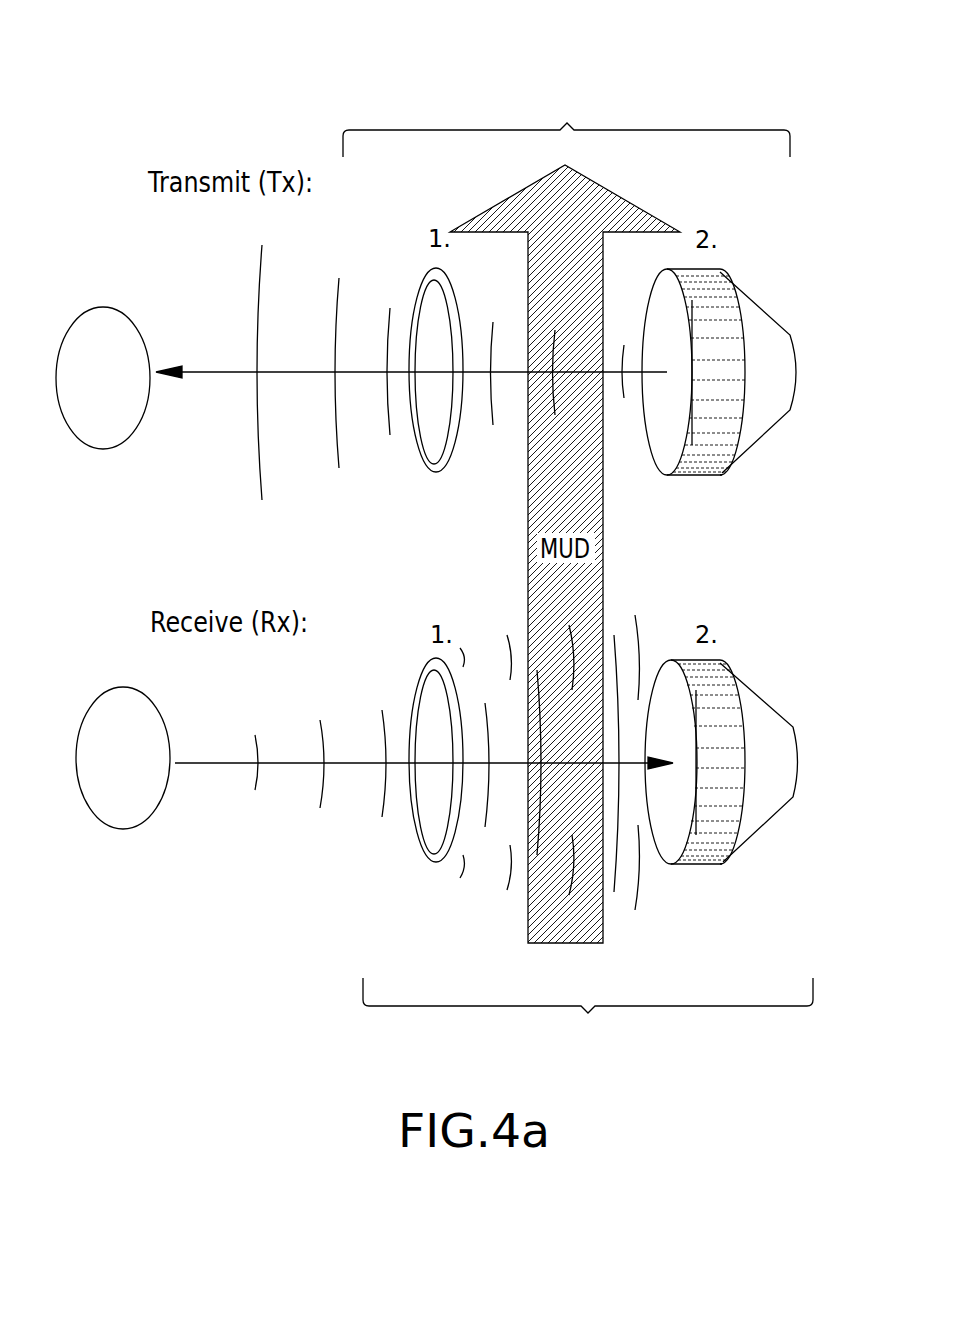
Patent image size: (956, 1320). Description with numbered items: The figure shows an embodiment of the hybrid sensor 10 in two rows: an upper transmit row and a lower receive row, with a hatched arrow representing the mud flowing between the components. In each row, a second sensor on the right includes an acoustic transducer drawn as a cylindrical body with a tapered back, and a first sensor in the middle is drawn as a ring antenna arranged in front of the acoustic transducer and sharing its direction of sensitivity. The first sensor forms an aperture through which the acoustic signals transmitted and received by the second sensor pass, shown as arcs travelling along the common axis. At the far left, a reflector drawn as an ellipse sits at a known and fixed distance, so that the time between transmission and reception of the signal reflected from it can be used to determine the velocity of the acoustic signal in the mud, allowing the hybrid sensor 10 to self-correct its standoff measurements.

The hybrid sensor 10 is at (578, 571).